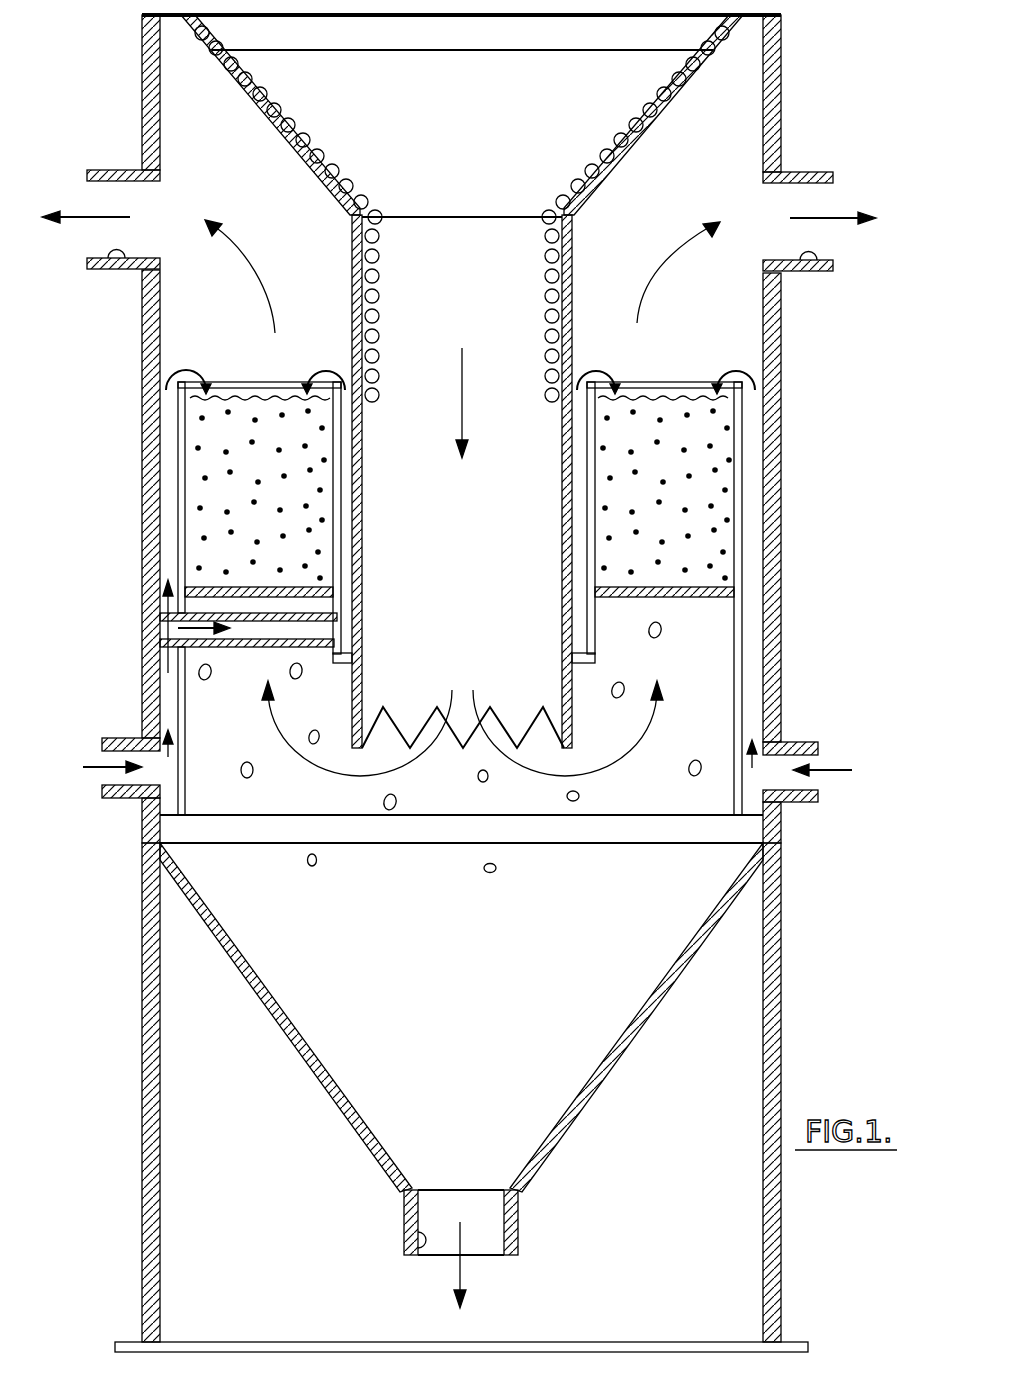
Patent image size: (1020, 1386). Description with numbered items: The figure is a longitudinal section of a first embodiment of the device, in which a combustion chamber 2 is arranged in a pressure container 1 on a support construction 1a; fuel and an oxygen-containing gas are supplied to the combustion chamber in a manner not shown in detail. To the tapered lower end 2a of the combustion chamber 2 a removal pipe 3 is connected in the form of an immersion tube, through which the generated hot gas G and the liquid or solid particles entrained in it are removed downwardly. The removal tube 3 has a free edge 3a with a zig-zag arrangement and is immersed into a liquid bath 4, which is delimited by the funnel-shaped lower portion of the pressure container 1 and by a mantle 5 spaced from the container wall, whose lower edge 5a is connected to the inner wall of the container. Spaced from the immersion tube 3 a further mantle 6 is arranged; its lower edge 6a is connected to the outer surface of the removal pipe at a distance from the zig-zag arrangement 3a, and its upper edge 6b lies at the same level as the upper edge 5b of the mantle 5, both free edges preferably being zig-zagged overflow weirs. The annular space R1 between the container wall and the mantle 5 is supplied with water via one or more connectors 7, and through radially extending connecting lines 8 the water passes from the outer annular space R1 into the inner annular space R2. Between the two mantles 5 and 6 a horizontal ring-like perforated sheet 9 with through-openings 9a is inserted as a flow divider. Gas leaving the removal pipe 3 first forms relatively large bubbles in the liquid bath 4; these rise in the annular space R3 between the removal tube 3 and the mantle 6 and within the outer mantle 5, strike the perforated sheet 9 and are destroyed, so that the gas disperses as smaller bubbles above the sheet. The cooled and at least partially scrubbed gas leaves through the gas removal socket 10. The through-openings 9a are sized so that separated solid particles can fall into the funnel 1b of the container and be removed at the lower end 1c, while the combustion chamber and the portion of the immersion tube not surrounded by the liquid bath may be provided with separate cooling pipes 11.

The pressure container 1 is at (788, 480).
The support construction 1a is at (782, 1062).
The funnel 1b is at (266, 990).
The lower end 1c is at (417, 1257).
The combustion chamber 2 is at (256, 138).
The tapered lower end 2a is at (613, 140).
The removal pipe 3 is at (562, 498).
The free edge 3a is at (404, 714).
The liquid bath 4 is at (470, 1037).
The mantle 5 is at (750, 533).
The lower edge 5a is at (735, 806).
The upper edge 5b is at (735, 373).
The further mantle 6 is at (595, 600).
The lower edge 6a is at (580, 668).
The upper edge 6b is at (592, 378).
The connectors 7 is at (117, 800).
The connecting lines 8 is at (241, 650).
The perforated sheet 9 is at (241, 595).
The through-openings 9a is at (716, 598).
The gas removal socket 10 is at (113, 272).
The cooling pipes 11 is at (380, 268).
The hot gas G is at (462, 395).
The outer annular space R1 is at (172, 518).
The inner annular space R2 is at (346, 524).
The annular space R3 is at (178, 442).